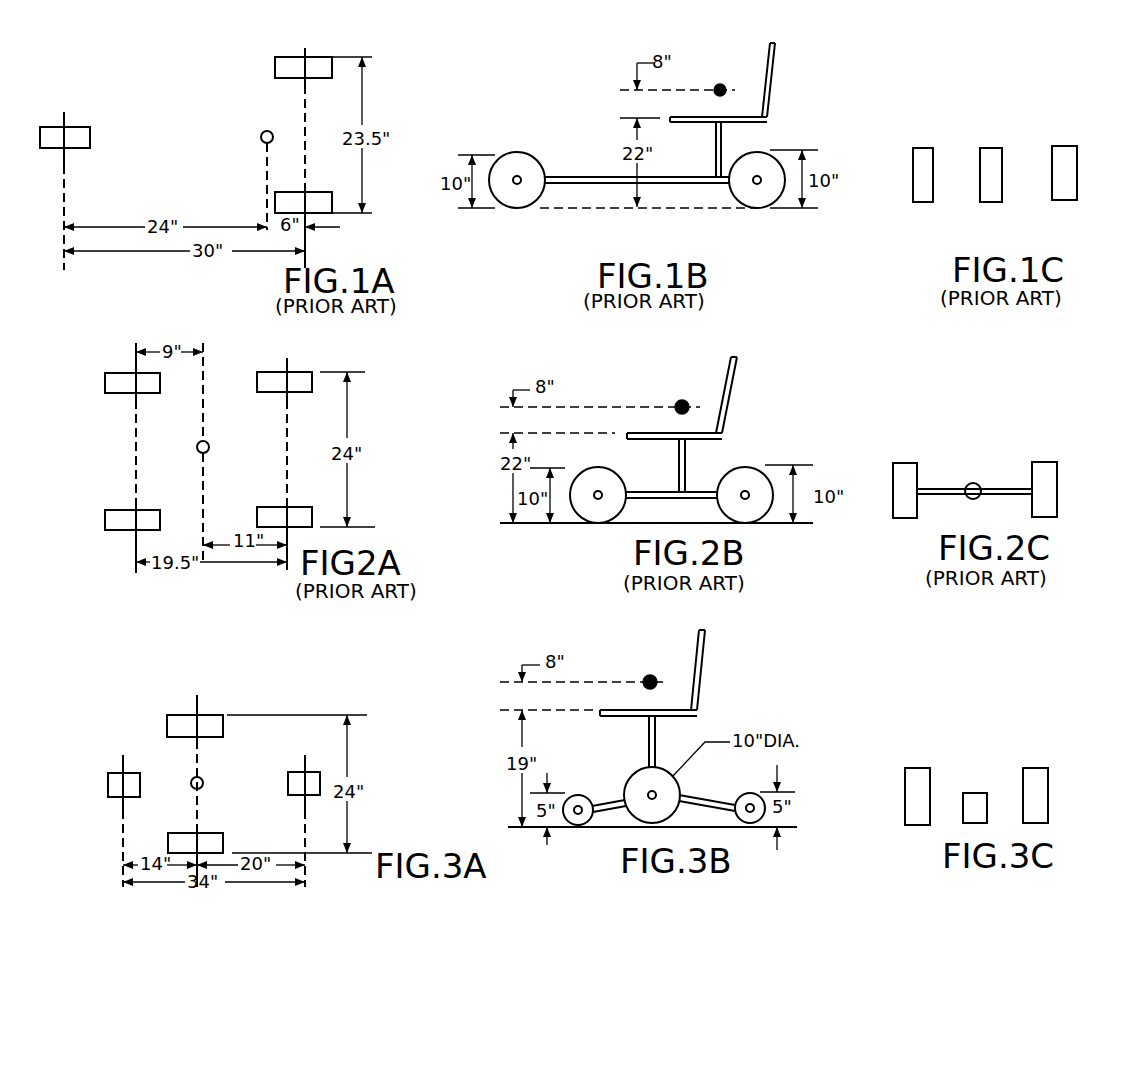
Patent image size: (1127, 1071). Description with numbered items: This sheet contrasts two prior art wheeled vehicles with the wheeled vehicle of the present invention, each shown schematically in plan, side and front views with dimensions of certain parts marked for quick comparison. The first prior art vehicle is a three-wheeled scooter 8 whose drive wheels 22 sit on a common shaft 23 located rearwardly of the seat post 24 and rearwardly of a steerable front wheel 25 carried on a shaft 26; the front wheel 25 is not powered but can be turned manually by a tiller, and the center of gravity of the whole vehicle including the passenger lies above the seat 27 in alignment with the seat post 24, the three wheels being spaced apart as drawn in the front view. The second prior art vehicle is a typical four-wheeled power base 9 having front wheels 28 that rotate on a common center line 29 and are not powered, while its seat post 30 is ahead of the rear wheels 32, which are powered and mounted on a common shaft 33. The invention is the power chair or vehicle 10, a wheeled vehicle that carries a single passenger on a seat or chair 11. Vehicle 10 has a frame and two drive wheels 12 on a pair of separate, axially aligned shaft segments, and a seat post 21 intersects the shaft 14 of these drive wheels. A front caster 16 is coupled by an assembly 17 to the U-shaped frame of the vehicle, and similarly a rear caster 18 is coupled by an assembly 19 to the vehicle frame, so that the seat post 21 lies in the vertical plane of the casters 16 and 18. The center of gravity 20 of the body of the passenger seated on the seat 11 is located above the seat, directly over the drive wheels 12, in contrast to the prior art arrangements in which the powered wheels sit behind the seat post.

In FIG. 1A, the scooter 8 is at (170, 105).
In FIG. 1B, the scooter 8 is at (615, 107).
In FIG. 1C, the scooter 8 is at (986, 128).
In FIG. 1A, the drive wheels 22 is at (275, 70).
In FIG. 1B, the drive wheels 22 is at (762, 210).
In FIG. 1C, the drive wheels 22 is at (925, 202).
In FIG. 1A, the common shaft 23 is at (305, 140).
In FIG. 1A, the seat post 24 is at (265, 133).
In FIG. 1B, the seat post 24 is at (725, 140).
In FIG. 1A, the steerable front wheel 25 is at (90, 136).
In FIG. 1B, the steerable front wheel 25 is at (508, 210).
In FIG. 1C, the steerable front wheel 25 is at (991, 202).
In FIG. 1A, the shaft 26 is at (64, 184).
In FIG. 1B, the shaft 26 is at (521, 178).
In FIG. 1B, the seat 27 is at (768, 108).
In FIG. 2A, the four-wheeled power base 9 is at (225, 378).
In FIG. 2B, the four-wheeled power base 9 is at (672, 384).
In FIG. 2C, the four-wheeled power base 9 is at (986, 452).
In FIG. 2A, the front wheels 28 is at (120, 393).
In FIG. 2C, the front wheels 28 is at (908, 465).
In FIG. 2A, the common center line 29 is at (136, 450).
In FIG. 2B, the common center line 29 is at (601, 491).
In FIG. 2C, the common center line 29 is at (952, 488).
In FIG. 2A, the seat post 30 is at (209, 447).
In FIG. 2B, the seat post 30 is at (686, 442).
In FIG. 2A, the rear wheels 32 is at (290, 380).
In FIG. 2B, the rear wheels 32 is at (750, 520).
In FIG. 2A, the common shaft 33 is at (287, 450).
In FIG. 2B, the common shaft 33 is at (745, 491).
In FIG. 2B, the center of gravity 20 is at (600, 522).
In FIG. 3A, the power chair 10 is at (268, 700).
In FIG. 3B, the power chair 10 is at (742, 710).
In FIG. 3C, the power chair 10 is at (982, 748).
In FIG. 3B, the seat 11 is at (694, 700).
In FIG. 3A, the drive wheels 12 is at (210, 715).
In FIG. 3B, the drive wheels 12 is at (665, 808).
In FIG. 3C, the drive wheels 12 is at (915, 775).
In FIG. 3A, the shaft 14 is at (197, 815).
In FIG. 3B, the shaft 14 is at (648, 797).
In FIG. 3A, the front caster 16 is at (108, 782).
In FIG. 3B, the front caster 16 is at (582, 795).
In FIG. 3C, the front caster 16 is at (975, 800).
In FIG. 3A, the assembly 17 is at (123, 828).
In FIG. 3B, the assembly 17 is at (578, 825).
In FIG. 3A, the rear caster 18 is at (288, 778).
In FIG. 3B, the rear caster 18 is at (760, 793).
In FIG. 3B, the assembly 19 is at (752, 823).
In FIG. 3A, the seat post 21 is at (191, 780).
In FIG. 3B, the seat post 21 is at (657, 738).